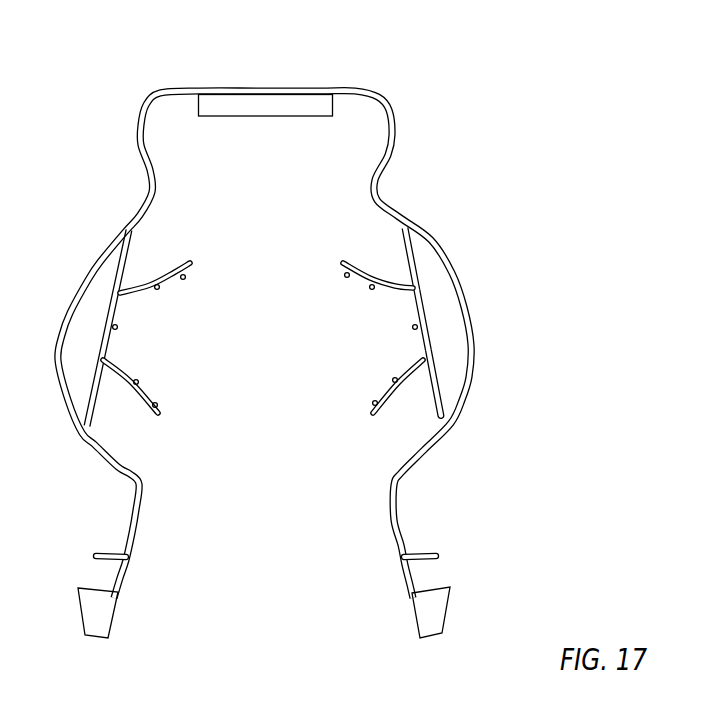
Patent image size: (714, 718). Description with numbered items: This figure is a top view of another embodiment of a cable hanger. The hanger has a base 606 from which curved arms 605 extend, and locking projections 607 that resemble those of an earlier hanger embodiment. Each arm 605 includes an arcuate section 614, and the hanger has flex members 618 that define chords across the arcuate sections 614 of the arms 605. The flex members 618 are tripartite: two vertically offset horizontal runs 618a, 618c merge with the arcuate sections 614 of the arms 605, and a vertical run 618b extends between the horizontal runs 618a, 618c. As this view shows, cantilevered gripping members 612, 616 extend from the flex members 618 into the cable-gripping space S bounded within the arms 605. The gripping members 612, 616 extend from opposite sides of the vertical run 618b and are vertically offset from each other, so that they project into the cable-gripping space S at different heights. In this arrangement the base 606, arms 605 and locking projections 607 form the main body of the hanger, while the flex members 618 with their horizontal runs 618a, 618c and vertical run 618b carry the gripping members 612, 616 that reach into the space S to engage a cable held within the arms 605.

The curved arm 605 is at (398, 215).
The base 606 is at (350, 91).
The locking projection 607 is at (438, 608).
The cantilevered gripping member 612 is at (367, 268).
The arcuate section 614 is at (500, 287).
The cantilevered gripping member 616 is at (390, 402).
The flex member 618 is at (333, 326).
The horizontal run 618a is at (417, 285).
The vertical run 618b is at (425, 333).
The horizontal run 618c is at (438, 387).
The cable-gripping space S is at (274, 334).